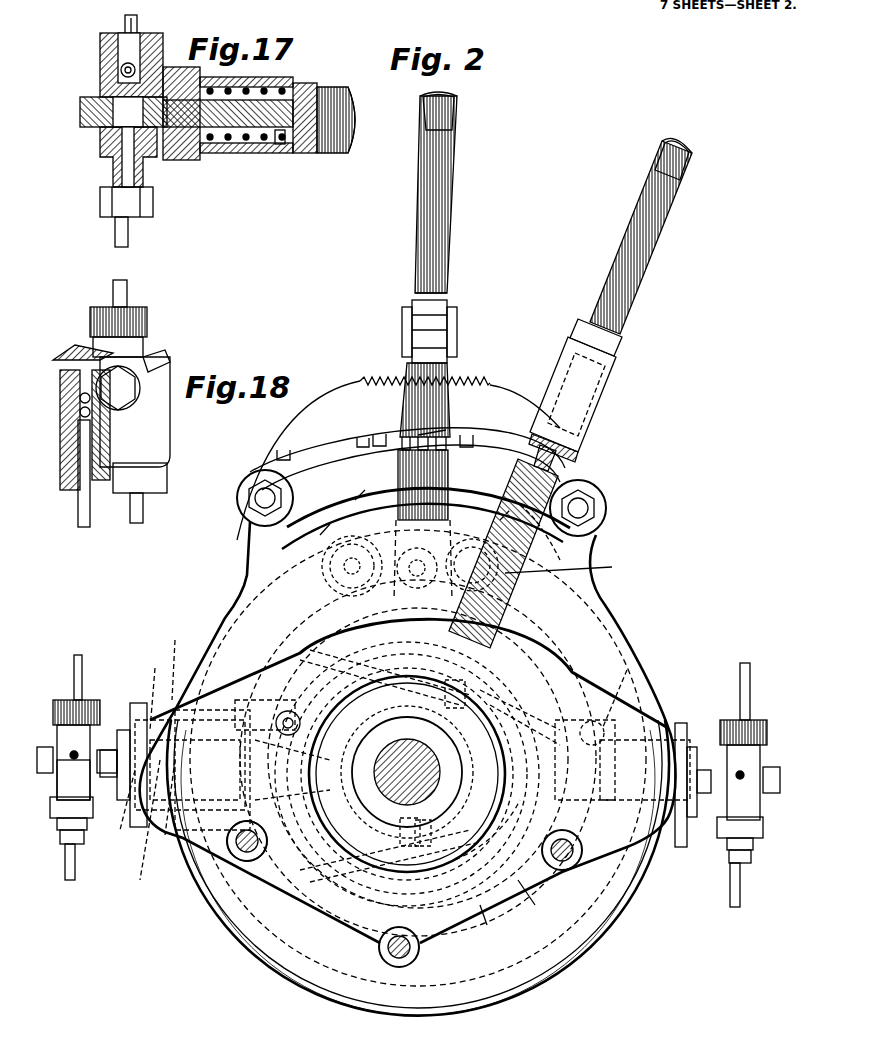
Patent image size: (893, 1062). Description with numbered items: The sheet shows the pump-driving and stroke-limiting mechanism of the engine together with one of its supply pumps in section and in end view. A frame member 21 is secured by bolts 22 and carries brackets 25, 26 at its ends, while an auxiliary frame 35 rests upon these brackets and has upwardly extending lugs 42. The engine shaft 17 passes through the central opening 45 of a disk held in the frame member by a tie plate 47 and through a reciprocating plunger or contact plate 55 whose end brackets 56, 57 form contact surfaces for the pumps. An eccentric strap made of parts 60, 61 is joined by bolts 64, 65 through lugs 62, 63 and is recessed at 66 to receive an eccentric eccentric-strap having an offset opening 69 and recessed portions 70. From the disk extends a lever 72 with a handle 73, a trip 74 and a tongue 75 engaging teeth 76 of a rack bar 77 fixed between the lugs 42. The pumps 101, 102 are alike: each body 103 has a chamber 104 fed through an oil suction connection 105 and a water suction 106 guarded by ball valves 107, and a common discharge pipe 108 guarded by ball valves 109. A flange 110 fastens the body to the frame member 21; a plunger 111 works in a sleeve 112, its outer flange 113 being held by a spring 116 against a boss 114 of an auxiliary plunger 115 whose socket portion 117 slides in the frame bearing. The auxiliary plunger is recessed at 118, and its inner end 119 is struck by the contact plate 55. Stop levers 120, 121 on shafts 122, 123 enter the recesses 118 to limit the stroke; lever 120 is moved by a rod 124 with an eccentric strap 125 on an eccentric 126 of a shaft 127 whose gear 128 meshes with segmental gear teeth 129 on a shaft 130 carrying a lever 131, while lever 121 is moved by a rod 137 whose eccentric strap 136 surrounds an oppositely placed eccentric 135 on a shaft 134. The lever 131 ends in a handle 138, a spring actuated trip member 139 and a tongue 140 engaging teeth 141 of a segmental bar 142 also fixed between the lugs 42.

In FIG. 2, the engine shaft 17 is at (405, 806).
In FIG. 2, the frame member 21 is at (555, 642).
In FIG. 2, the bolts 22 is at (238, 848).
In FIG. 2, the bracket 25 is at (679, 840).
In FIG. 2, the bracket 26 is at (138, 828).
In FIG. 2, the auxiliary frame 35 is at (232, 588).
In FIG. 2, the lugs 42 is at (256, 538).
In FIG. 2, the central opening 45 is at (468, 792).
In FIG. 2, the tie plate 47 is at (487, 830).
In FIG. 2, the reciprocating plunger or contact plate 55 is at (492, 928).
In FIG. 2, the bracket 56 is at (399, 758).
In FIG. 2, the bracket 57 is at (539, 902).
In FIG. 2, the eccentric strap part 60 is at (292, 770).
In FIG. 2, the eccentric strap part 61 is at (525, 725).
In FIG. 2, the lug 62 is at (390, 763).
In FIG. 2, the lug 63 is at (430, 779).
In FIG. 2, the bolt 64 is at (520, 710).
In FIG. 2, the bolt 65 is at (434, 863).
In FIG. 2, the recess 66 is at (516, 770).
In FIG. 2, the offset opening 69 is at (413, 772).
In FIG. 2, the recessed portions 70 is at (407, 774).
In FIG. 2, the lever 72 is at (567, 567).
In FIG. 2, the handle 73 is at (692, 160).
In FIG. 2, the trip 74 is at (652, 220).
In FIG. 2, the tongue 75 is at (580, 458).
In FIG. 2, the teeth 76 is at (444, 436).
In FIG. 2, the rack bar 77 is at (407, 459).
In FIG. 2, the pump 101 is at (88, 742).
In FIG. 2, the pump 102 is at (727, 752).
In FIG. 17, the pump body 103 is at (105, 150).
In FIG. 18, the pump body 103 is at (145, 430).
In FIG. 2, the pump body 103 is at (62, 782).
In FIG. 17, the chamber 104 is at (118, 112).
In FIG. 18, the suction connection 105 is at (80, 510).
In FIG. 2, the suction connection 105 is at (735, 900).
In FIG. 17, the water suction 106 is at (118, 232).
In FIG. 18, the water suction 106 is at (143, 512).
In FIG. 2, the water suction 106 is at (66, 872).
In FIG. 18, the ball valves 107 is at (62, 400).
In FIG. 17, the discharge pipe 108 is at (138, 24).
In FIG. 18, the discharge pipe 108 is at (124, 290).
In FIG. 2, the discharge pipe 108 is at (78, 660).
In FIG. 17, the ball valves 109 is at (118, 72).
In FIG. 17, the flange 110 is at (172, 158).
In FIG. 17, the plunger 111 is at (205, 155).
In FIG. 2, the plunger 111 is at (113, 808).
In FIG. 17, the sleeve 112 is at (248, 142).
In FIG. 17, the flange 113 is at (282, 146).
In FIG. 2, the flange 113 is at (167, 656).
In FIG. 17, the boss 114 is at (275, 112).
In FIG. 17, the auxiliary plunger 115 is at (308, 153).
In FIG. 2, the auxiliary plunger 115 is at (174, 808).
In FIG. 17, the spring 116 is at (266, 88).
In FIG. 2, the spring 116 is at (154, 686).
In FIG. 17, the socket portion 117 is at (228, 78).
In FIG. 2, the socket portion 117 is at (144, 832).
In FIG. 17, the recess 118 is at (340, 100).
In FIG. 17, the inner end 119 is at (358, 120).
In FIG. 2, the inner end 119 is at (396, 772).
In FIG. 2, the stop lever 120 is at (241, 836).
In FIG. 2, the stop lever 121 is at (408, 774).
In FIG. 2, the shaft 122 is at (262, 705).
In FIG. 2, the shaft 123 is at (585, 745).
In FIG. 2, the rod 124 is at (418, 758).
In FIG. 2, the eccentric strap 125 is at (335, 566).
In FIG. 2, the eccentric 126 is at (373, 485).
In FIG. 2, the shaft 127 is at (418, 758).
In FIG. 2, the gear 128 is at (338, 519).
In FIG. 2, the segmental gear teeth 129 is at (419, 522).
In FIG. 2, the shaft 130 is at (523, 556).
In FIG. 2, the lever 131 is at (436, 395).
In FIG. 2, the shaft 134 is at (503, 553).
In FIG. 2, the eccentric 135 is at (530, 520).
In FIG. 2, the eccentric strap 136 is at (409, 673).
In FIG. 2, the rod 137 is at (630, 668).
In FIG. 2, the handle 138 is at (458, 116).
In FIG. 2, the trip member 139 is at (450, 165).
In FIG. 2, the tongue 140 is at (403, 352).
In FIG. 2, the teeth 141 is at (378, 378).
In FIG. 2, the segmental bar 142 is at (398, 460).